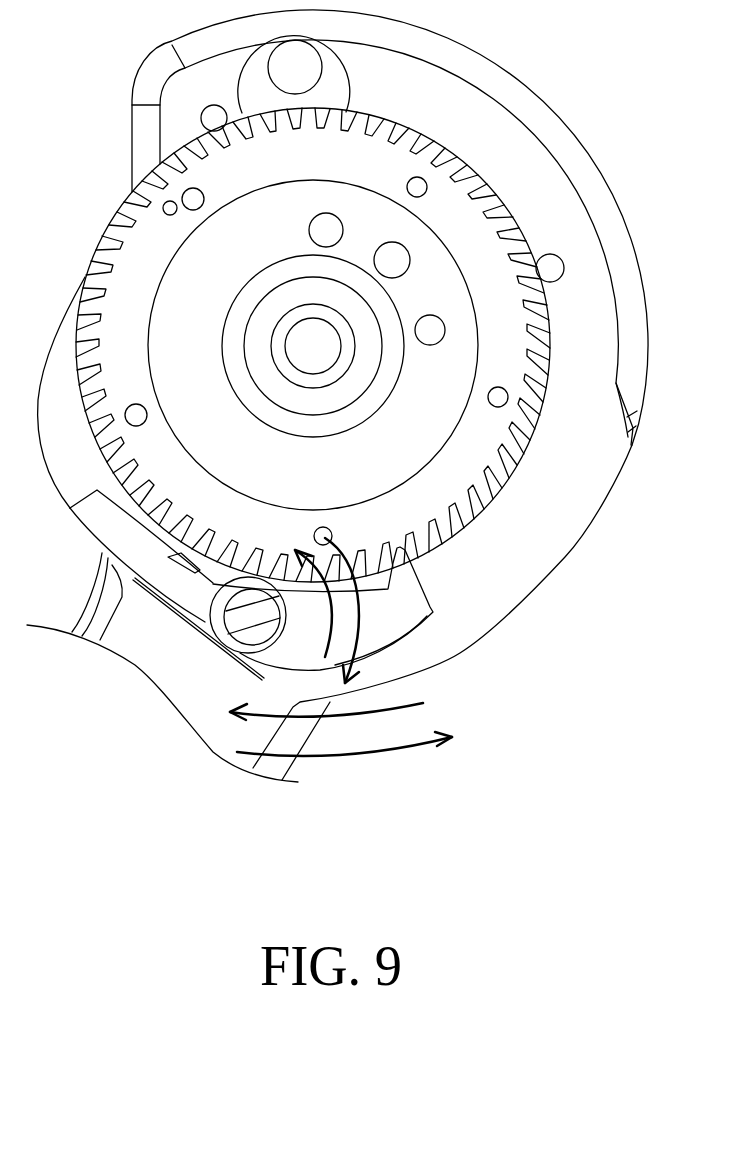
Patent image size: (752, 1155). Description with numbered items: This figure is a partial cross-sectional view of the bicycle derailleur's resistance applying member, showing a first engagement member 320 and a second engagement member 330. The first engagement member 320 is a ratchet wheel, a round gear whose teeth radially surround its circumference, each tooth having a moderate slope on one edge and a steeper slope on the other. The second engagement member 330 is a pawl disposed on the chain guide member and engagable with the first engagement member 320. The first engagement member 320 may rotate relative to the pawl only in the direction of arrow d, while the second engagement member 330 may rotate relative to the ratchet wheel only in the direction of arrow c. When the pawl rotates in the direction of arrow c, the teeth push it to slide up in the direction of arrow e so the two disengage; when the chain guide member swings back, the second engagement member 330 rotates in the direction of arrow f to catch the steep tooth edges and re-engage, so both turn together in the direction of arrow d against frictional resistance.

The first engagement member 320 is at (465, 217).
The second engagement member 330 is at (407, 612).
The arrow c is at (326, 703).
The arrow d is at (344, 739).
The arrow e is at (354, 610).
The arrow f is at (320, 603).